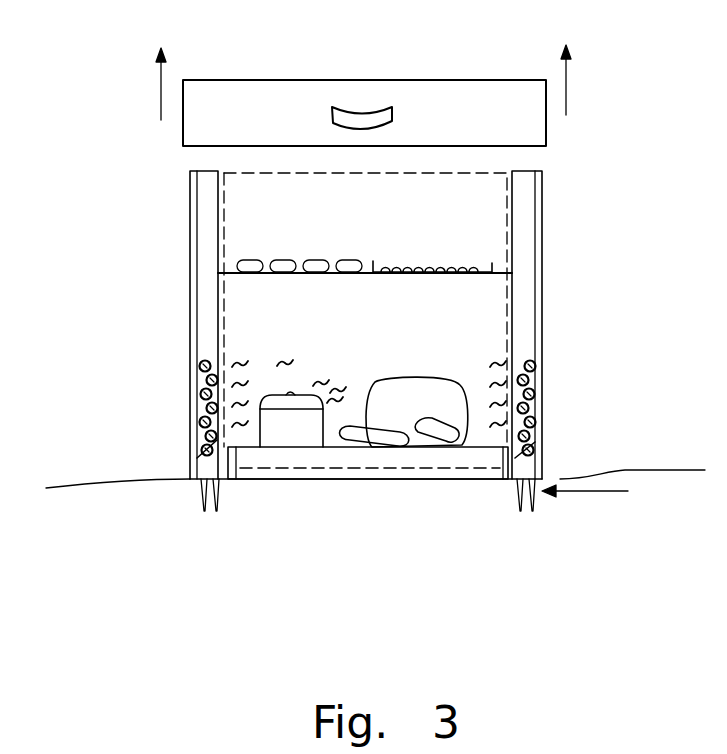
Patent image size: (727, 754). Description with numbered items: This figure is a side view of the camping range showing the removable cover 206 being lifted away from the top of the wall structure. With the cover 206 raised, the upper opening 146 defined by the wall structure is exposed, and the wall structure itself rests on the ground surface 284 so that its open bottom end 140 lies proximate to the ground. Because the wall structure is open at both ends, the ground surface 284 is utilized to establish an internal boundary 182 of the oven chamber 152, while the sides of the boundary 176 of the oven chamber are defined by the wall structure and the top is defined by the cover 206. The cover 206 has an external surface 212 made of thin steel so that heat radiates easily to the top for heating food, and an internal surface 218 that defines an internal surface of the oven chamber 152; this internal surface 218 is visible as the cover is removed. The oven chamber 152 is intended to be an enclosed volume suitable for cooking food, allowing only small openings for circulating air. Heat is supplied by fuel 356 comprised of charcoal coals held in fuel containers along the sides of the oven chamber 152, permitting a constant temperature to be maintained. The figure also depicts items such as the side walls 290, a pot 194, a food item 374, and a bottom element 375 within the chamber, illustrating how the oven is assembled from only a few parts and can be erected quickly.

The open bottom end 140 is at (536, 518).
The upper opening 146 is at (470, 165).
The oven chamber 152 is at (388, 360).
The boundary of the oven chamber 176 is at (224, 206).
The internal boundary 182 is at (247, 482).
The pot 194 is at (282, 416).
The cover 206 is at (290, 121).
The external surface 212 is at (461, 70).
The internal surface 218 is at (396, 86).
The ground surface 284 is at (587, 468).
The side walls 290 is at (210, 321).
The fuel 356 is at (530, 441).
The food item 374 is at (404, 412).
The bottom heating element 375 is at (363, 462).